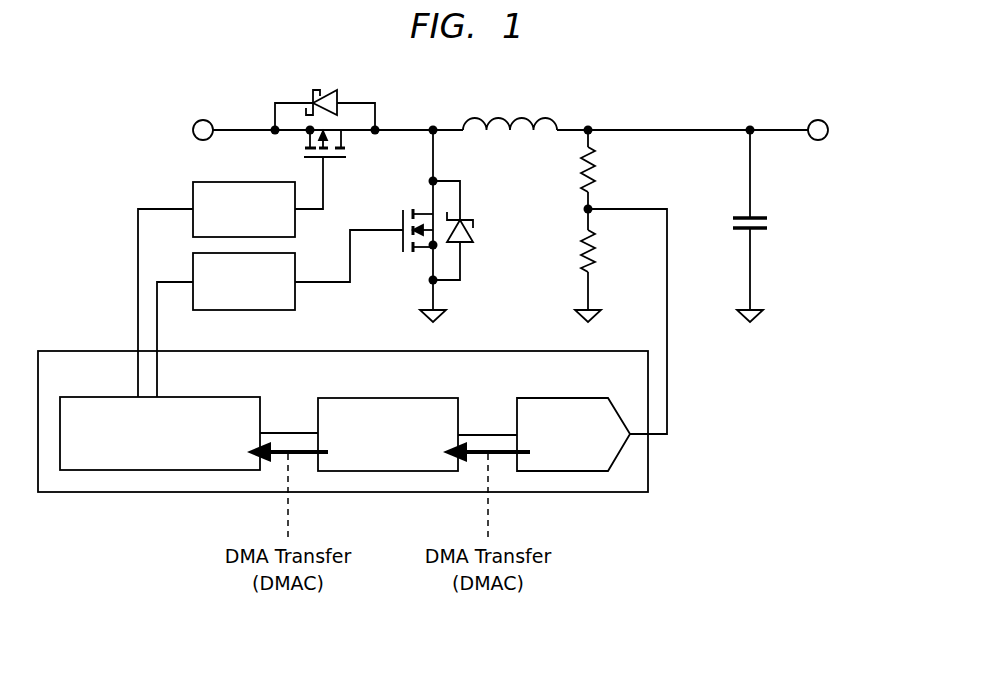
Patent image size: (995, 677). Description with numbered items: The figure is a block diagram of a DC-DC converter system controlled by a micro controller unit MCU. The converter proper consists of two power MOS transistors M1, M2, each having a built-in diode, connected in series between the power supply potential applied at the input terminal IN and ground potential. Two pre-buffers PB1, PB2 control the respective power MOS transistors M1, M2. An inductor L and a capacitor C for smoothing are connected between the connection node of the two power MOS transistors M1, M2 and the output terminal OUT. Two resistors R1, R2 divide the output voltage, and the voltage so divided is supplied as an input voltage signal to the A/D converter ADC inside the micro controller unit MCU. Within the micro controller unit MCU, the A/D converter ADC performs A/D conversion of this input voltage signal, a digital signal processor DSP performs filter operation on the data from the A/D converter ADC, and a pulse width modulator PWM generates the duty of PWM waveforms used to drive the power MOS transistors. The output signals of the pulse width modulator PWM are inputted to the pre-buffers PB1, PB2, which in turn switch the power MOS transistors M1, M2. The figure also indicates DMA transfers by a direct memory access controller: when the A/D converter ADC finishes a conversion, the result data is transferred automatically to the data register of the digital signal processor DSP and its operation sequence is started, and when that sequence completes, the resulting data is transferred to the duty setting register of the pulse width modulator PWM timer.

The input terminal IN is at (187, 130).
The output terminal OUT is at (840, 130).
The power MOS transistor M1 is at (328, 169).
The power MOS transistor M2 is at (384, 220).
The inductor L is at (510, 108).
The resistor R1 is at (570, 169).
The resistor R2 is at (570, 259).
The capacitor C is at (738, 220).
The pre-buffer PB1 is at (216, 289).
The pre-buffer PB2 is at (226, 325).
The micro controller unit MCU is at (343, 445).
The pulse width modulator PWM is at (160, 433).
The digital signal processor DSP is at (388, 434).
The A/D converter ADC is at (573, 434).